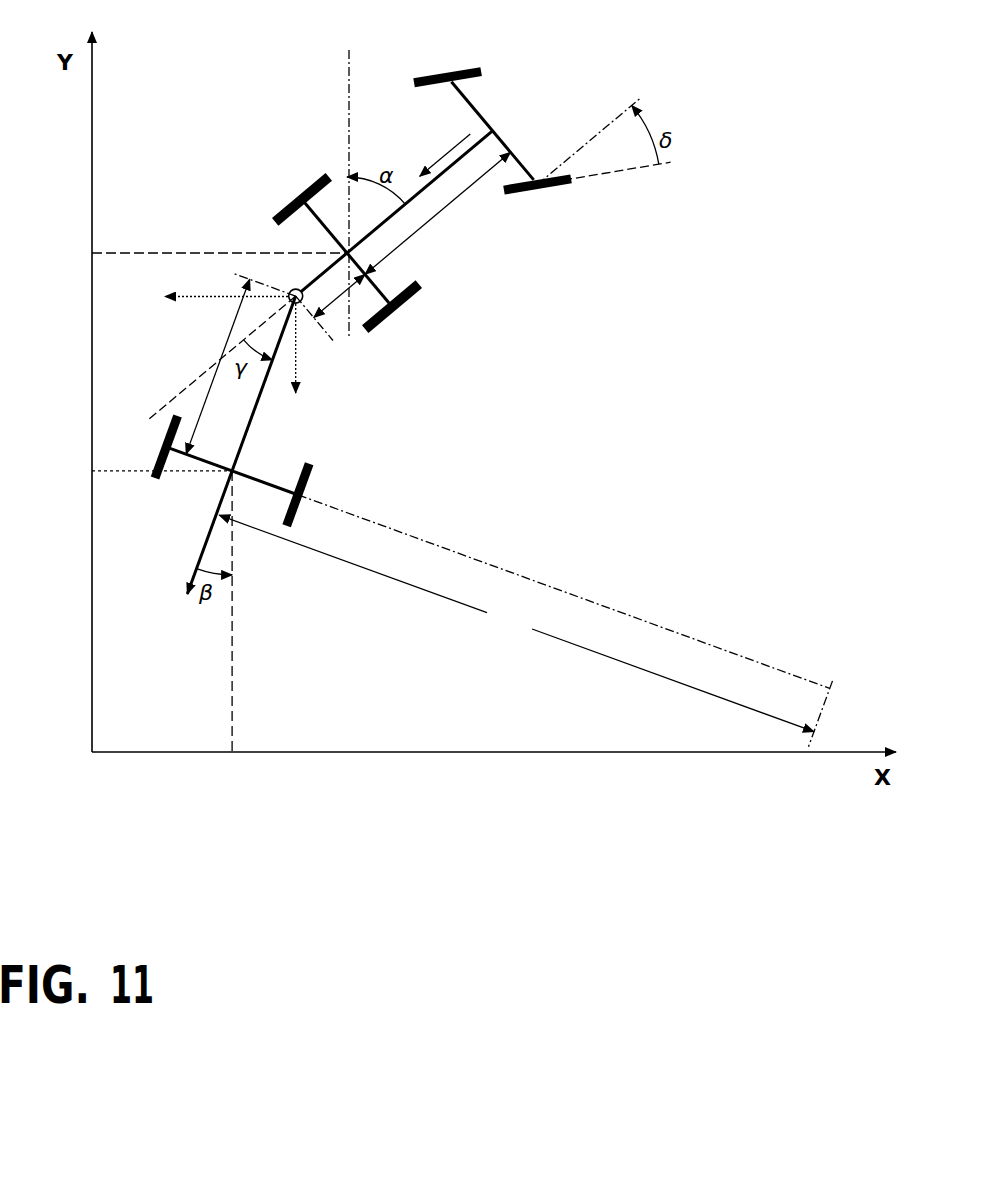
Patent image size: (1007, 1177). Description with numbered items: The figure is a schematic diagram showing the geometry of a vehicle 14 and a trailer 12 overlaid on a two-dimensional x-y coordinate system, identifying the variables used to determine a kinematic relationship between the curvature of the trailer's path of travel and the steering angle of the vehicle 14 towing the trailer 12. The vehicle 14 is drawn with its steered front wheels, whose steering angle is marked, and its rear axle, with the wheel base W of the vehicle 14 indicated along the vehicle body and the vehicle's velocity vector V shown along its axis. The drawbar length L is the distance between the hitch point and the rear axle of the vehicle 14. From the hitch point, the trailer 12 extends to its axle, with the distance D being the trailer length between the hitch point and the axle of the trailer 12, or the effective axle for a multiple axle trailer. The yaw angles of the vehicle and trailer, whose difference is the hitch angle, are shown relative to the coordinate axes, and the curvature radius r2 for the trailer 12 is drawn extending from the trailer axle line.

The trailer 12 is at (346, 432).
The vehicle 14 is at (487, 262).
The vehicle velocity V is at (445, 155).
The wheel base of the vehicle W is at (438, 213).
The drawbar length L is at (330, 307).
The distance between hitch point and axle of the trailer D is at (241, 363).
The curvature radius for the trailer r2 is at (525, 621).